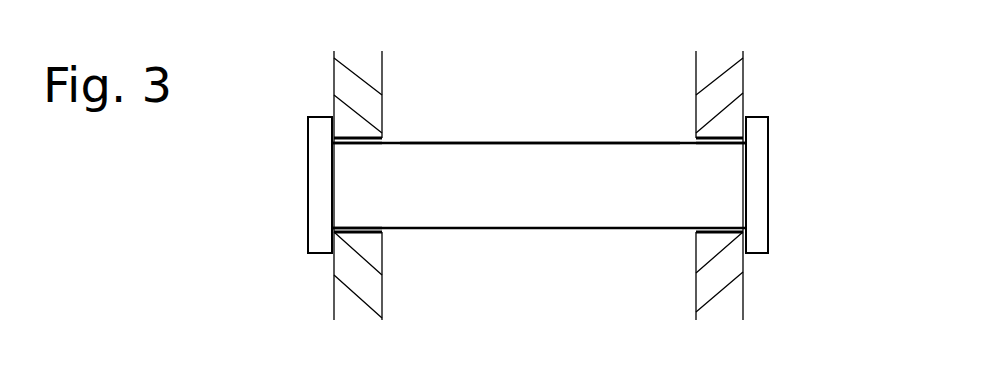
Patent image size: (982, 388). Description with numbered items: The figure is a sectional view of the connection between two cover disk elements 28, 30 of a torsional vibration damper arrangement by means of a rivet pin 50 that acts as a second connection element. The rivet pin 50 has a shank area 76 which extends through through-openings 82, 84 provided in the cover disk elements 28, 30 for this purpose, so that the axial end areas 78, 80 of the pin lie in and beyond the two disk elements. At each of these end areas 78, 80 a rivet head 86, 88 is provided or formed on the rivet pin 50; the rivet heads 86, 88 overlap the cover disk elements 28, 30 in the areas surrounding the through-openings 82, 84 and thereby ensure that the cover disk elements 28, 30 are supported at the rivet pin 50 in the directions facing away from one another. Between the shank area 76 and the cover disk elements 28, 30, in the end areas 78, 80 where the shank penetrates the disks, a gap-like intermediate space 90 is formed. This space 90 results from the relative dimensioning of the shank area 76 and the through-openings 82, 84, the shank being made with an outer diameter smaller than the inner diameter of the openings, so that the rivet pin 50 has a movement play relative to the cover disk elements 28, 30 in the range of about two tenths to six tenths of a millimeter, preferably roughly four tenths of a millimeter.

The cover disk element 28 is at (335, 303).
The cover disk element 30 is at (743, 300).
The rivet pin 50 is at (545, 141).
The shank area 76 is at (585, 202).
The axial end area 78 is at (330, 111).
The axial end area 80 is at (753, 102).
The through-opening 82 is at (358, 145).
The through-opening 84 is at (713, 145).
The rivet head 86 is at (320, 212).
The rivet head 88 is at (763, 216).
The gap-like intermediate space 90 is at (686, 135).